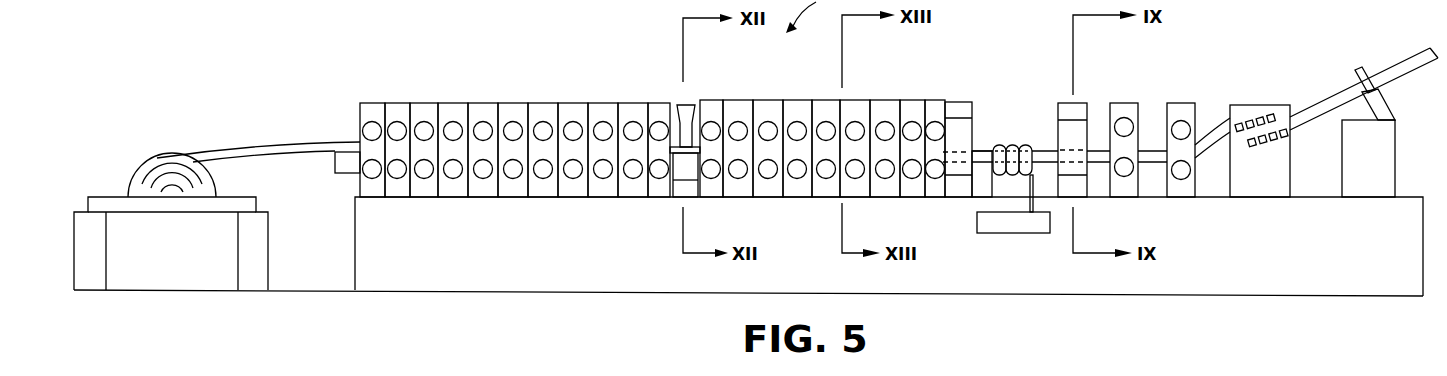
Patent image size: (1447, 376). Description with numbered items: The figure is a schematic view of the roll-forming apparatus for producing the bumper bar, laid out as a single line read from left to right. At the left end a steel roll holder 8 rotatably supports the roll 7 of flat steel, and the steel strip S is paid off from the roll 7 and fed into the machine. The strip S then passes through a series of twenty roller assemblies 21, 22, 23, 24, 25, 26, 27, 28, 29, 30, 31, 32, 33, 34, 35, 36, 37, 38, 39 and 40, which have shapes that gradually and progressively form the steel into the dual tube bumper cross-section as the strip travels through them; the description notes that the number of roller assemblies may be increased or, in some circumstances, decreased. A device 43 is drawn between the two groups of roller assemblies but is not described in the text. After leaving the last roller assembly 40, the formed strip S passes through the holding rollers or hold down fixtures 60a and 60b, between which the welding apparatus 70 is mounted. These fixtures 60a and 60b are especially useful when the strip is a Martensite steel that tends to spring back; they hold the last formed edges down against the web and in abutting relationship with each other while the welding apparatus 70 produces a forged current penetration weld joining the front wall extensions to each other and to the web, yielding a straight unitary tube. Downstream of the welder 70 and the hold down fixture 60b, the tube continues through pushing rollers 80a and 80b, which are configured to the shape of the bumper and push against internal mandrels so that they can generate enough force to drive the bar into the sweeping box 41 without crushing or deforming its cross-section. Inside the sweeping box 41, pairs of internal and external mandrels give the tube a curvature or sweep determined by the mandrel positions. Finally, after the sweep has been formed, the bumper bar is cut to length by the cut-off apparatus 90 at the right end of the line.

The roll 7 is at (168, 157).
The steel strip S is at (280, 143).
The steel roll holder 8 is at (191, 280).
The roller assembly 21 is at (366, 102).
The roller assembly 22 is at (395, 102).
The roller assembly 23 is at (420, 102).
The roller assembly 24 is at (452, 102).
The roller assembly 25 is at (484, 102).
The roller assembly 26 is at (514, 102).
The roller assembly 27 is at (543, 102).
The roller assembly 28 is at (572, 102).
The roller assembly 29 is at (602, 102).
The roller assembly 30 is at (632, 102).
The roller assembly 31 is at (657, 102).
The roller assembly 32 is at (713, 100).
The roller assembly 33 is at (737, 100).
The roller assembly 34 is at (766, 100).
The roller assembly 35 is at (796, 100).
The roller assembly 36 is at (825, 100).
The roller assembly 37 is at (853, 100).
The roller assembly 38 is at (882, 100).
The roller assembly 39 is at (912, 100).
The roller assembly 40 is at (936, 100).
The guide device 43 is at (688, 104).
The holding roller / hold down fixture 60a is at (963, 100).
The welding apparatus 70 is at (1016, 143).
The holding roller / hold down fixture 60b is at (1073, 103).
The pushing roller 80a is at (1122, 103).
The pushing roller 80b is at (1180, 103).
The sweeping box 41 is at (1247, 103).
The cut-off apparatus 90 is at (1390, 103).